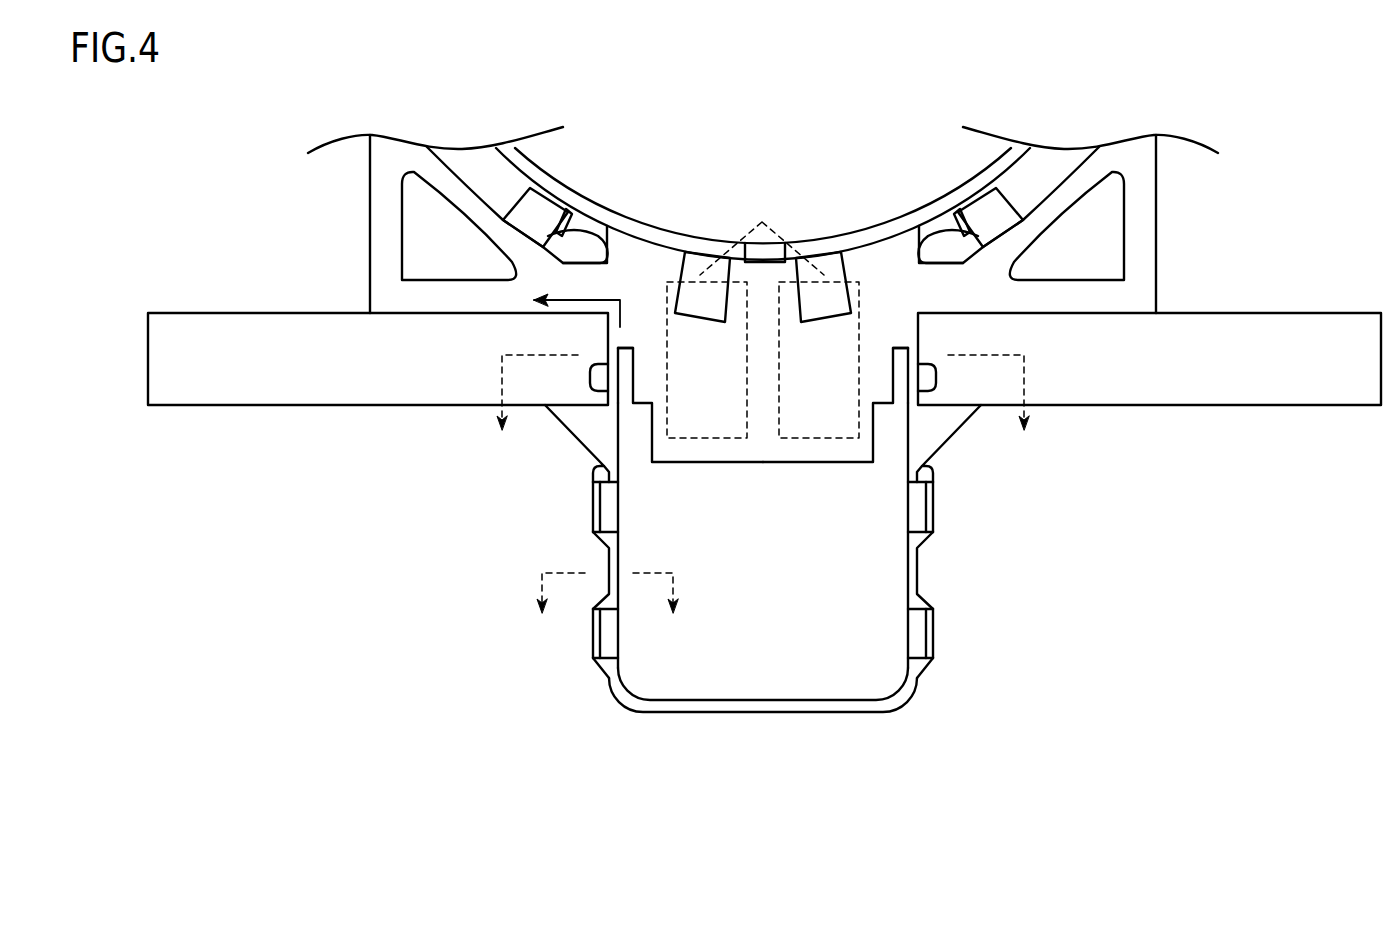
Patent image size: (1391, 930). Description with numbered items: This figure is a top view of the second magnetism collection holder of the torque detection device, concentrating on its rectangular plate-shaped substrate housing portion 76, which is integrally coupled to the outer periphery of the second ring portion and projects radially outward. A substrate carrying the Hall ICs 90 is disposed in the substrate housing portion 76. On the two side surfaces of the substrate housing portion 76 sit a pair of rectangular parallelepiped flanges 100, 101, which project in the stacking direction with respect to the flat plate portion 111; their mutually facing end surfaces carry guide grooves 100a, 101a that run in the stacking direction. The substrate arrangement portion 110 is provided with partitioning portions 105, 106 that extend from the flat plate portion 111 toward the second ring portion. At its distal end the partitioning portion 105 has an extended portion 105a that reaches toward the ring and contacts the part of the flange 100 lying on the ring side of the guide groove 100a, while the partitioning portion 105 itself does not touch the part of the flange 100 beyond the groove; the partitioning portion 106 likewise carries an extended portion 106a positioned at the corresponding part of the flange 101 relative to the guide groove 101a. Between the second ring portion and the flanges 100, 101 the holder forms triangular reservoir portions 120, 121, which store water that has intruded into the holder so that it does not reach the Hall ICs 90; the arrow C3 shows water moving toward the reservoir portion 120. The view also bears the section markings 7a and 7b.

The section line 7a- 7a is at (764, 411).
The section line 7b- 7b is at (612, 612).
The substrate housing portion 76 is at (763, 610).
The Hall ICs 90 is at (762, 222).
The flange 100 is at (203, 380).
The guide groove 100a is at (590, 377).
The flange 101 is at (1240, 380).
The guide groove 101a is at (936, 377).
The partitioning portion 105 is at (627, 390).
The extended portion 105a is at (623, 345).
The partitioning portion 106 is at (899, 390).
The extended portion 106a is at (903, 345).
The substrate arrangement portion 110 is at (757, 462).
The flat plate portion 111 is at (808, 663).
The reservoir portion 120 is at (418, 236).
The reservoir portion 121 is at (1108, 236).
The arrow C3 is at (570, 300).